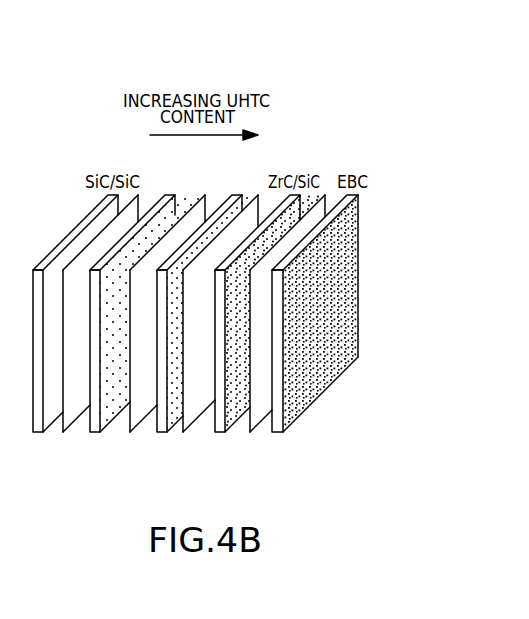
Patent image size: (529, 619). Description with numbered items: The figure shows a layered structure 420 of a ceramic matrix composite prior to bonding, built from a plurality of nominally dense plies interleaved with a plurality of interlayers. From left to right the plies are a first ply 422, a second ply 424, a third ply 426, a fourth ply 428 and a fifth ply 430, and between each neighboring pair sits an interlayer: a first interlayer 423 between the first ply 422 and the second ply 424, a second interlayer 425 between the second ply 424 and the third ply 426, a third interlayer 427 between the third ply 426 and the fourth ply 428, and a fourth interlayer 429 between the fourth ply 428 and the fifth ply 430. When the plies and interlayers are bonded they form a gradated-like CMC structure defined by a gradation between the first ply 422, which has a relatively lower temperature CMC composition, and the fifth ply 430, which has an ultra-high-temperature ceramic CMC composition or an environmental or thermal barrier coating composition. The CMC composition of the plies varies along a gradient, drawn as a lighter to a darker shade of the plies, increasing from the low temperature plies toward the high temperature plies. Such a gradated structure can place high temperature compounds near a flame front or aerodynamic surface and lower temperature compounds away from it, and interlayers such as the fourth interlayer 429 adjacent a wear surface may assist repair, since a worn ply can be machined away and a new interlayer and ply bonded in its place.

The layered structure 420 is at (319, 150).
The first ply 422 is at (46, 258).
The first interlayer 423 is at (69, 428).
The second ply 424 is at (168, 196).
The second interlayer 425 is at (133, 428).
The third ply 426 is at (236, 197).
The third interlayer 427 is at (187, 428).
The fourth ply 428 is at (273, 210).
The fourth interlayer 429 is at (253, 428).
The fifth ply 430 is at (359, 198).